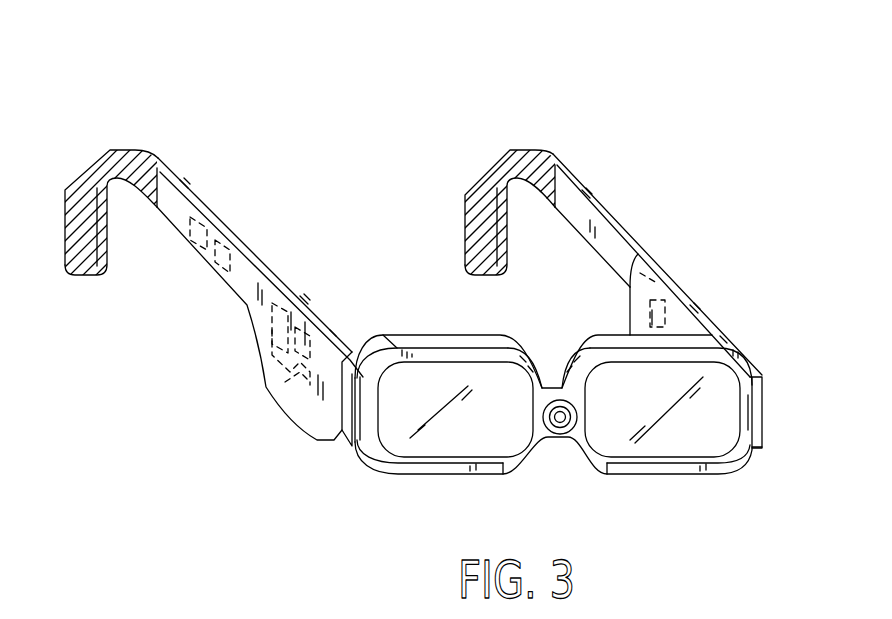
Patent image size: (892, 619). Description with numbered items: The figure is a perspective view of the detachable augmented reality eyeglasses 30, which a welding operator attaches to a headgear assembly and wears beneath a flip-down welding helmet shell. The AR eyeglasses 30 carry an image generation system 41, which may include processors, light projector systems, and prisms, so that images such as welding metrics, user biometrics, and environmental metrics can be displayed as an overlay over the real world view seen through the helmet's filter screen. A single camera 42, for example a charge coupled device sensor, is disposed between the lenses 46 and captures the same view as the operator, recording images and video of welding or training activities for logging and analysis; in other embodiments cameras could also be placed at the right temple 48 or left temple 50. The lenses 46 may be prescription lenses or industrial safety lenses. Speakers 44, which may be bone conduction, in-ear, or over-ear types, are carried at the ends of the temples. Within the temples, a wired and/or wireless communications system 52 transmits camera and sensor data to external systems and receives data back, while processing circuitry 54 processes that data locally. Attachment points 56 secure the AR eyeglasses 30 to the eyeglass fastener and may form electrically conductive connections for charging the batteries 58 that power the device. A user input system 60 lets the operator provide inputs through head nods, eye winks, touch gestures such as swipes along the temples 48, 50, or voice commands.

The AR eyeglasses 30 is at (81, 63).
The image generation system 41 is at (352, 446).
The camera 42 is at (566, 418).
The speakers 44 is at (88, 167).
The lenses 46 is at (465, 435).
The right temple 48 is at (310, 413).
The left temple 50 is at (586, 180).
The communications system 52 is at (667, 273).
The processing circuitry 54 is at (693, 298).
The attachment points 56 is at (193, 243).
The batteries 58 is at (265, 325).
The user input system 60 is at (288, 380).